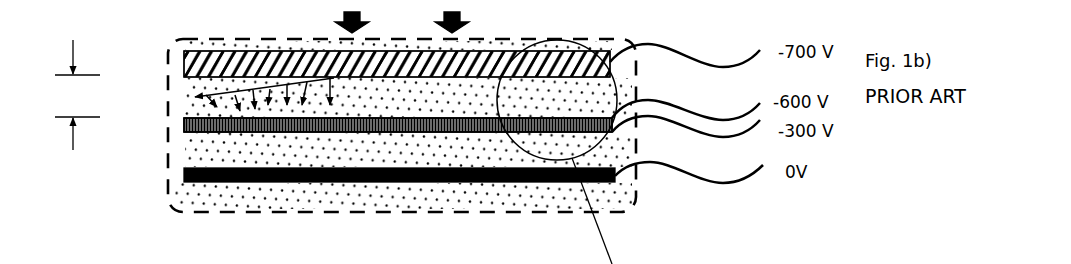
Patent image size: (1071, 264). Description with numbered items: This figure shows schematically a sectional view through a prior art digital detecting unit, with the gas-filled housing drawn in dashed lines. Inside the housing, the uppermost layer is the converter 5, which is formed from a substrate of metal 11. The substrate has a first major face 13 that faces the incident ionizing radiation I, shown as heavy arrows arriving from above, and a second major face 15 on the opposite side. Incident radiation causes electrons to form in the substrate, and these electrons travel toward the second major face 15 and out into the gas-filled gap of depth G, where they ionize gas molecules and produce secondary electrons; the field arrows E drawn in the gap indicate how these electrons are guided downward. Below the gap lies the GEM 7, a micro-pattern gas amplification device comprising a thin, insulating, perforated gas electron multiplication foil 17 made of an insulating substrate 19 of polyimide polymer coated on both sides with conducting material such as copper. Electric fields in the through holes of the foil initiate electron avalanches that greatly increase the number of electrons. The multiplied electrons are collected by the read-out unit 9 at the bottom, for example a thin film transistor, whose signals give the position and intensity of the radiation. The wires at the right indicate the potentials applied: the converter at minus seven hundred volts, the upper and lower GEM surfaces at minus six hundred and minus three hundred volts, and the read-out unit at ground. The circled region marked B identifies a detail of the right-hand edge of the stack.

The first major face 13 is at (193, 43).
The substrate of metal 11 is at (603, 75).
The converter 5 is at (178, 62).
The second major face 15 is at (607, 80).
The GEM 7 is at (181, 114).
The gas electron multiplication foil 17 is at (609, 129).
The insulating substrate 19 is at (447, 134).
The read-out unit 9 is at (181, 173).
The electric field E is at (191, 93).
The gap depth G is at (77, 108).
The incident ionizing radiation I is at (402, 22).
The section detail B is at (602, 152).